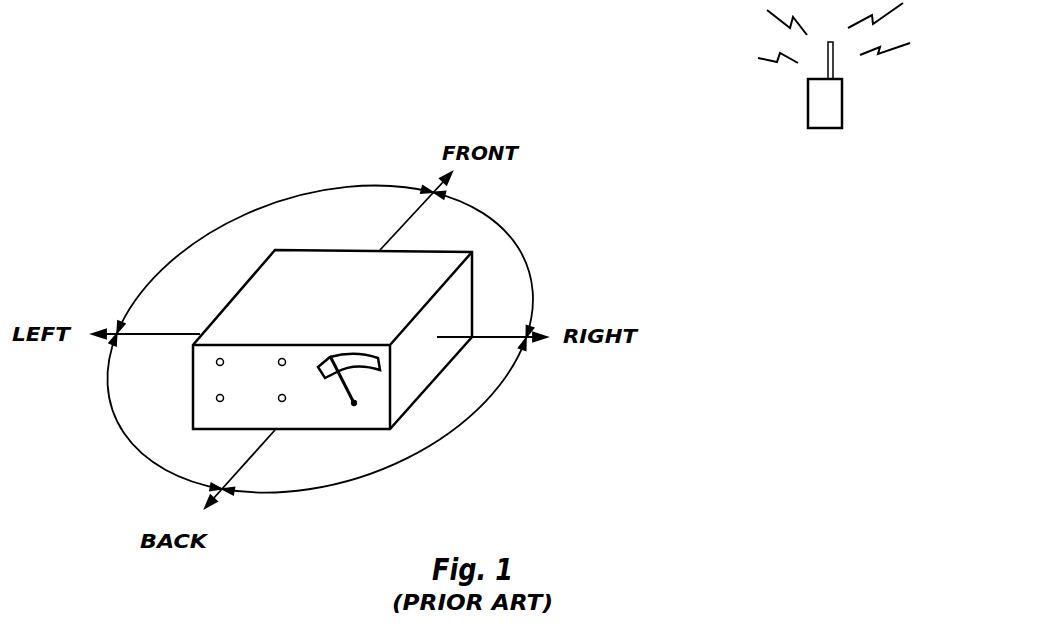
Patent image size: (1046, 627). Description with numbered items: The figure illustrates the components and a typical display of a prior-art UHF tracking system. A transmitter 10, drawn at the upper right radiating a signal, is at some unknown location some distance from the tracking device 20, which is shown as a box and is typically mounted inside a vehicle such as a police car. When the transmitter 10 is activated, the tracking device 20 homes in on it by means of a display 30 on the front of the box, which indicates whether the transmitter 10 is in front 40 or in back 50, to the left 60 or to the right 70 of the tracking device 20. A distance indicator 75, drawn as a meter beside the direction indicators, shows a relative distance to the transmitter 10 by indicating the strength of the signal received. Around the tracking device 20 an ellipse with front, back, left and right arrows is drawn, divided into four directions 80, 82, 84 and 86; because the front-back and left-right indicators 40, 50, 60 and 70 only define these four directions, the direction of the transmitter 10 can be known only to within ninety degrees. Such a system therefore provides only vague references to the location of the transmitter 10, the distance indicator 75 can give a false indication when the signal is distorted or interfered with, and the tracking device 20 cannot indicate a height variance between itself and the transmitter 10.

The transmitter 10 is at (817, 115).
The tracking device 20 is at (286, 312).
The display 30 is at (386, 377).
The front indicator 40 is at (216, 362).
The back indicator 50 is at (279, 362).
The left indicator 60 is at (216, 398).
The right indicator 70 is at (278, 398).
The distance indicator 75 is at (353, 393).
The first direction 80 is at (271, 266).
The second direction 82 is at (486, 264).
The third direction 84 is at (374, 416).
The fourth direction 86 is at (163, 406).